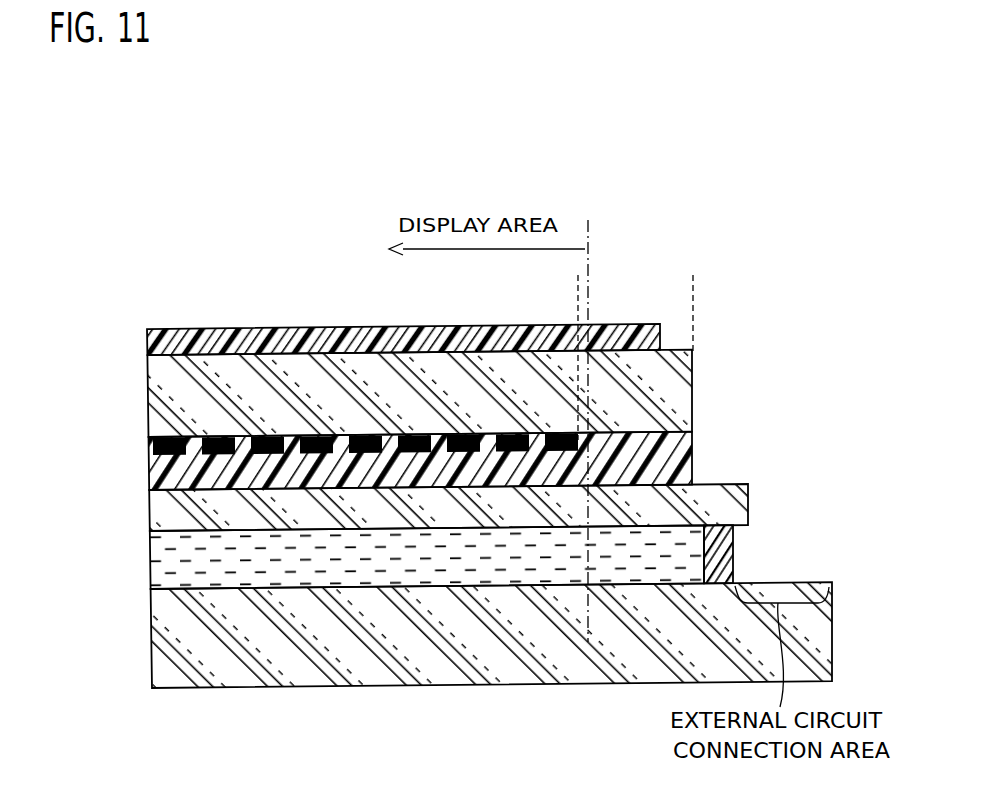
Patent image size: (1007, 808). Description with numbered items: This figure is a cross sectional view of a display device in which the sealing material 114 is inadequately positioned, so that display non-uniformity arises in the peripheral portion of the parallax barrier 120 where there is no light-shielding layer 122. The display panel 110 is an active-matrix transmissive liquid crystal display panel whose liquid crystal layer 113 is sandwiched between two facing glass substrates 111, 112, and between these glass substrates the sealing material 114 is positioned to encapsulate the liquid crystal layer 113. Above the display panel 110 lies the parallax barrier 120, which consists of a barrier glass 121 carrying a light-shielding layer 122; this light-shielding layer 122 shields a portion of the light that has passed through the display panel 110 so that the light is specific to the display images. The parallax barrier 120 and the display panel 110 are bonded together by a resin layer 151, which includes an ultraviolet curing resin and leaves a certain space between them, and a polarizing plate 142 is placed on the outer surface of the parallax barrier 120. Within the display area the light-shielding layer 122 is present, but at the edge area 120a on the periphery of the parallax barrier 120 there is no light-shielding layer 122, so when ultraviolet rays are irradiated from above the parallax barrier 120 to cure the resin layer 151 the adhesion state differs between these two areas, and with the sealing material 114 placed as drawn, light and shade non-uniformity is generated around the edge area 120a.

The display panel 110 is at (419, 586).
The glass substrate 111 is at (457, 635).
The glass substrate 112 is at (148, 516).
The liquid crystal layer 113 is at (149, 566).
The sealing material 114 is at (734, 559).
The parallax barrier 120 is at (348, 422).
The edge area 120a is at (693, 297).
The barrier glass 121 is at (147, 405).
The light-shielding layer 122 is at (330, 448).
The polarizing plate 142 is at (147, 347).
The resin layer 151 is at (147, 480).